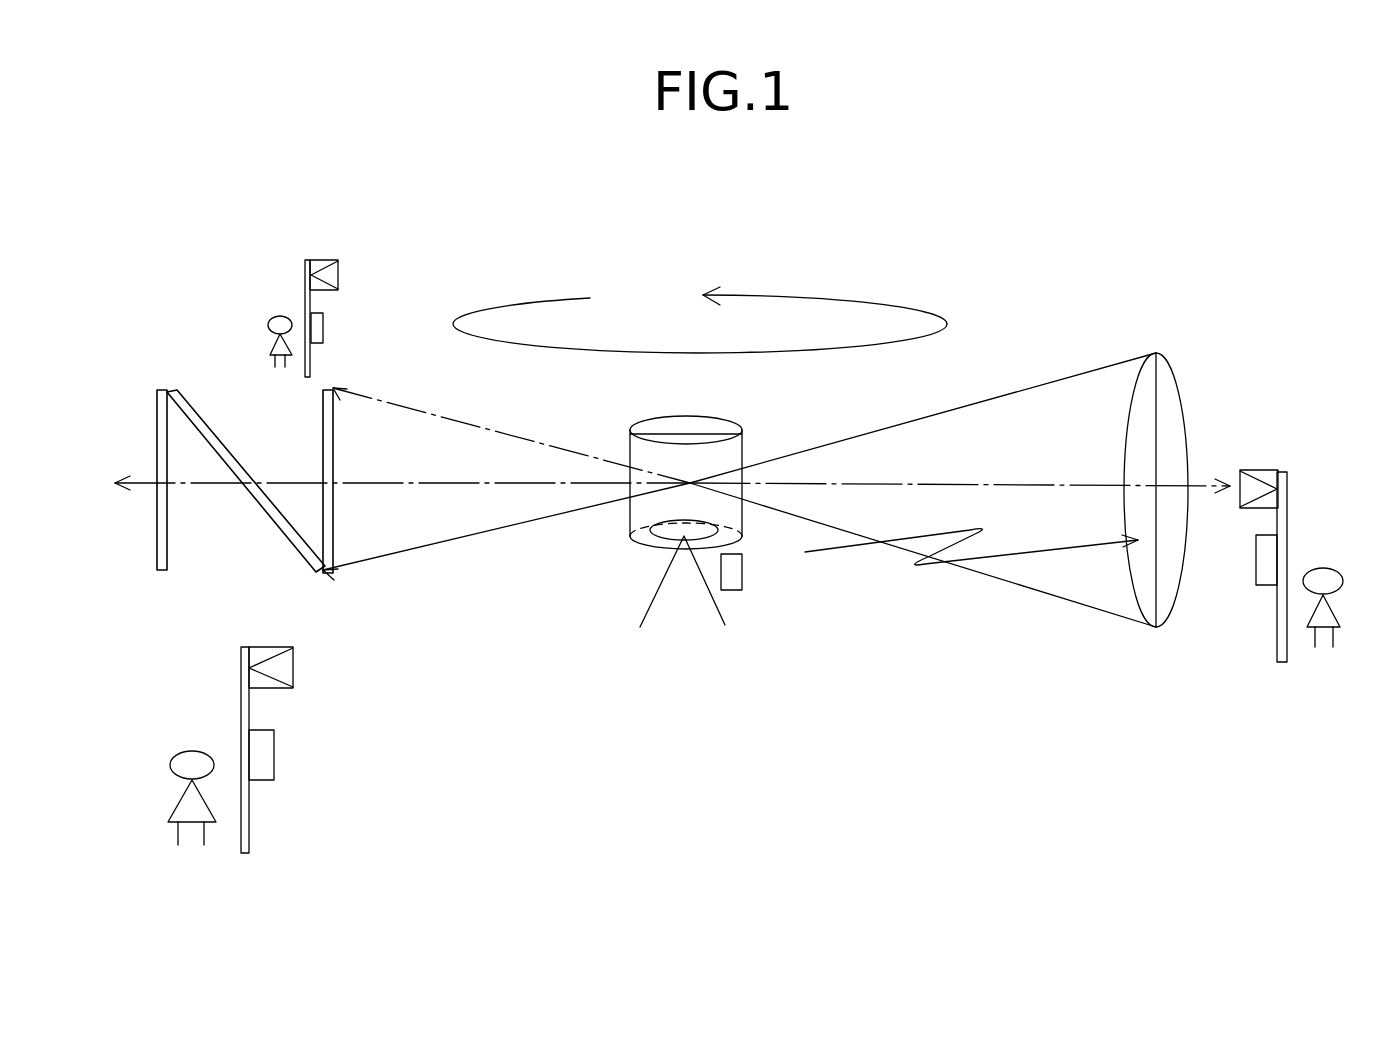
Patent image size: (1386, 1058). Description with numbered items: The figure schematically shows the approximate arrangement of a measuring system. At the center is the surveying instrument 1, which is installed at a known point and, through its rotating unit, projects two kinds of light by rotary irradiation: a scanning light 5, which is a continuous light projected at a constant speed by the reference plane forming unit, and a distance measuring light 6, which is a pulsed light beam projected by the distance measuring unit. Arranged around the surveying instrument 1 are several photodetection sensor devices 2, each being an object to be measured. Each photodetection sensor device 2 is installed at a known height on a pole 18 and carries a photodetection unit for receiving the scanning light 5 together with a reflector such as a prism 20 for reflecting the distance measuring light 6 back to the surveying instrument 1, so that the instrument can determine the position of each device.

The surveying instrument 1 is at (721, 420).
The photodetection sensor device 2 is at (303, 290).
The scanning light 5 is at (493, 533).
The distance measuring light 6 is at (1001, 483).
The pole 18 is at (1287, 527).
The prism 20 is at (272, 648).